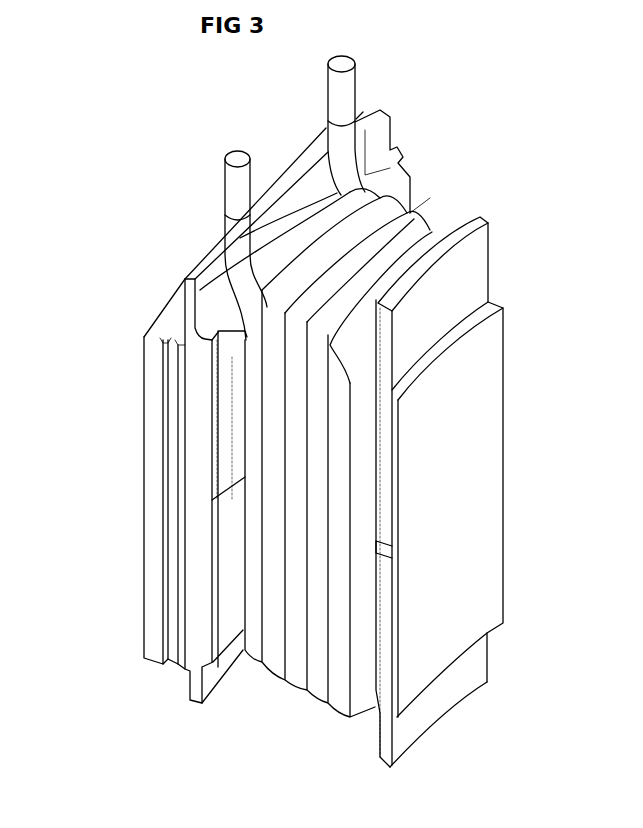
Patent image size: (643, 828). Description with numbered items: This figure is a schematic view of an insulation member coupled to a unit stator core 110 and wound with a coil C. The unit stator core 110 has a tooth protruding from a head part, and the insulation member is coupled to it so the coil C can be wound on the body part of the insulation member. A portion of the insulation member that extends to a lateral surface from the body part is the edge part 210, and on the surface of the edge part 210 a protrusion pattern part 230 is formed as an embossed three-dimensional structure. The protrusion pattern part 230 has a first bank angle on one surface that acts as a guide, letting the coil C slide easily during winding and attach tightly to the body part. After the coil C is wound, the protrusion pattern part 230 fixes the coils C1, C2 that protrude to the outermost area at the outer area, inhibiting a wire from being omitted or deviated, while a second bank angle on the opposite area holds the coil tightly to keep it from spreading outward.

The coil C is at (412, 212).
The coil protruding to the outermost area C1 is at (230, 182).
The coil protruding to the outermost area C2 is at (337, 87).
The unit stator core 110 is at (155, 518).
The edge part 210 is at (203, 437).
The protrusion pattern part 230 is at (218, 383).